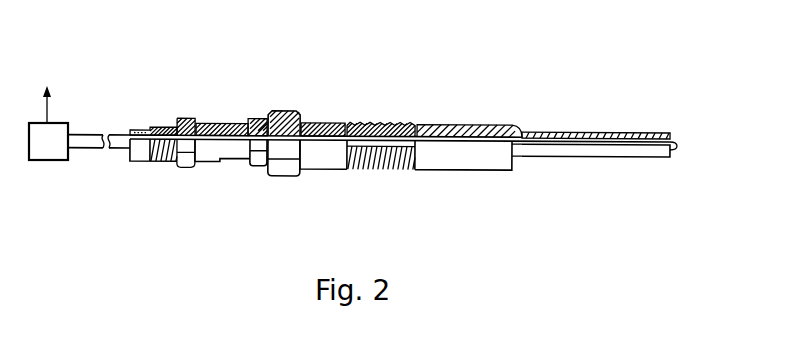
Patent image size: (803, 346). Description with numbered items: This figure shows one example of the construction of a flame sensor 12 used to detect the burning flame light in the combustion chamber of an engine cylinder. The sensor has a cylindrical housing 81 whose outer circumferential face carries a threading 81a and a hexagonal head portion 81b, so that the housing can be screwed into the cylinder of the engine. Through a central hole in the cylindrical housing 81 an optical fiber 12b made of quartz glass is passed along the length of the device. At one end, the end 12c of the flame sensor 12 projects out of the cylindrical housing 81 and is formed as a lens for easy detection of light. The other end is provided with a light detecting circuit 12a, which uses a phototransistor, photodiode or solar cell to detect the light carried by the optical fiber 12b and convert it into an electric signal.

The flame sensor 12 is at (424, 100).
The light detecting circuit 12a is at (68, 123).
The optical fiber 12b is at (92, 149).
The end 12c is at (678, 143).
The cylindrical housing 81 is at (475, 168).
The threading 81a is at (385, 169).
The hexagonal head portion 81b is at (292, 178).